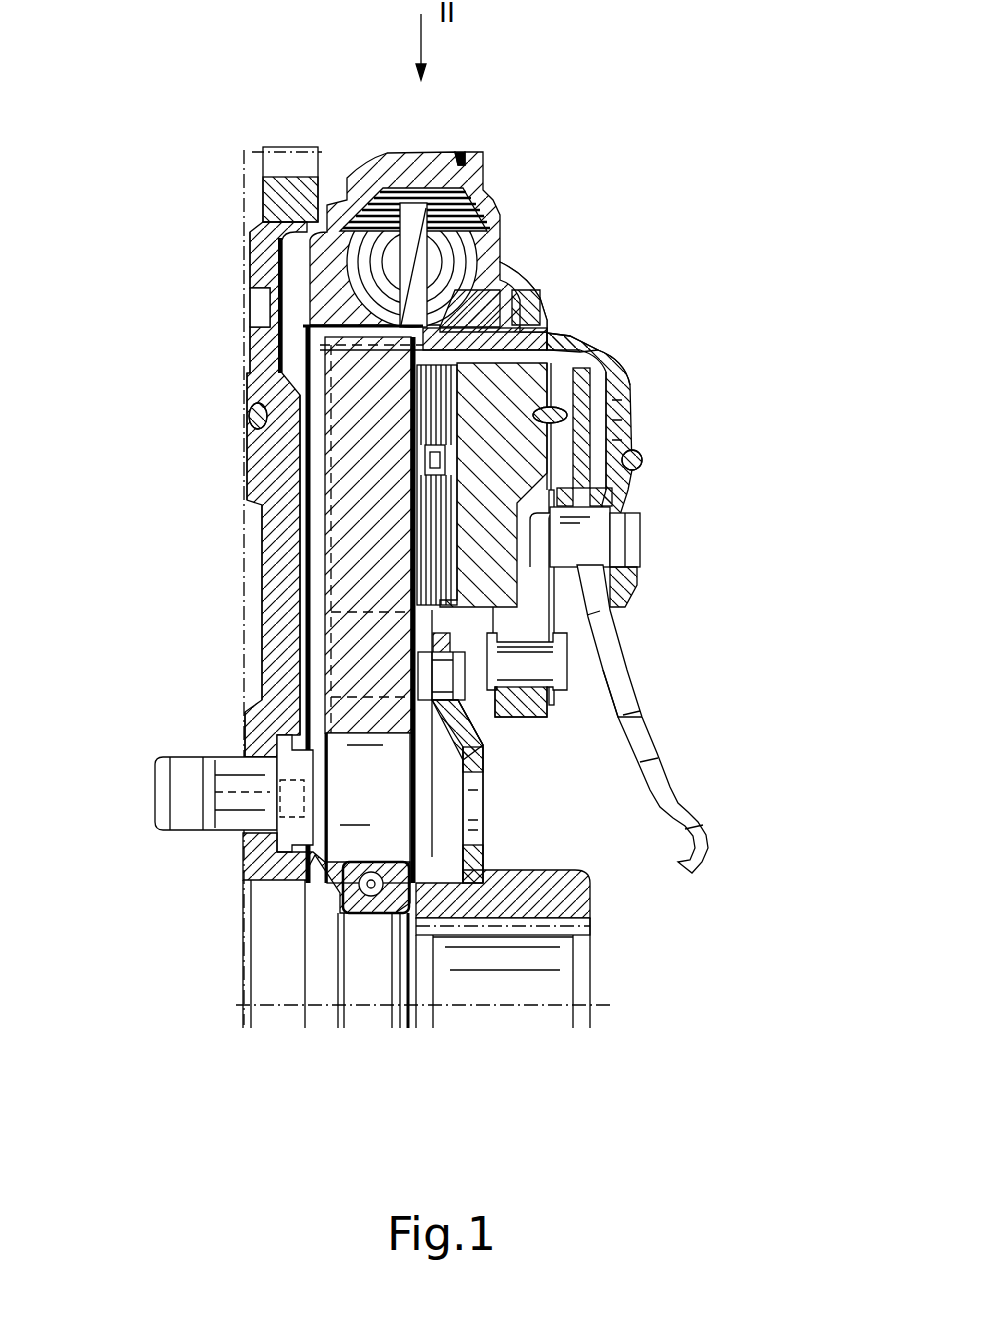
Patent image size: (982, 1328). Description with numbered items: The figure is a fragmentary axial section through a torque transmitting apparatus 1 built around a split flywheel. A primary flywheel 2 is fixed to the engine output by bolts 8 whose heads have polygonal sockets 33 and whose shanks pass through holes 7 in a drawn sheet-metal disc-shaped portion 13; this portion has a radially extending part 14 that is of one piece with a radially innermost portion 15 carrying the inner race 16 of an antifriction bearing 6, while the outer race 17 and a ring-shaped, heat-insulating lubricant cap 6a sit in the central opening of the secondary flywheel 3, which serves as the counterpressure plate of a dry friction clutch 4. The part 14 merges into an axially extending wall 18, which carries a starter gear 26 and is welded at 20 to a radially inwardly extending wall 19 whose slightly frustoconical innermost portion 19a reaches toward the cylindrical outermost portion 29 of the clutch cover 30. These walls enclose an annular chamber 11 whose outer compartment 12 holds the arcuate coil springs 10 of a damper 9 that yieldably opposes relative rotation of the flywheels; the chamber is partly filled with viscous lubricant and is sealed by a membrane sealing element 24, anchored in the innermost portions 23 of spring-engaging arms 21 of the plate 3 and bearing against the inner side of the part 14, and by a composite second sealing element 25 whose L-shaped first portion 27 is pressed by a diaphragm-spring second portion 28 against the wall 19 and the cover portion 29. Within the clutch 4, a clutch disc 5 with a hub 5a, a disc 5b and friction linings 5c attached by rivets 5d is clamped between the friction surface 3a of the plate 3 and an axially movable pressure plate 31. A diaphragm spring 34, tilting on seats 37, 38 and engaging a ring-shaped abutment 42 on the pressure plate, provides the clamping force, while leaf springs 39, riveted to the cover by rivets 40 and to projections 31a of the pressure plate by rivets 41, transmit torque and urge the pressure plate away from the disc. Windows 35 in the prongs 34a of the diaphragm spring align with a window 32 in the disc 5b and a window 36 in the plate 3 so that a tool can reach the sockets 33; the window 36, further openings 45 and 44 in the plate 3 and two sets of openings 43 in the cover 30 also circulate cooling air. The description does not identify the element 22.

The torque transmitting apparatus 1 is at (535, 101).
The primary flywheel 2 is at (255, 726).
The secondary flywheel 3 is at (335, 522).
The friction surface 3a is at (400, 540).
The dry friction clutch 4 is at (648, 363).
The clutch disc 5 is at (485, 743).
The hub 5a is at (578, 910).
The disc 5b is at (472, 867).
The friction linings 5c is at (425, 575).
The rivets 5d is at (590, 437).
The antifriction bearing 6 is at (340, 866).
The ring-shaped cap 6a is at (337, 904).
The holes 7 is at (240, 830).
The bolts 8 is at (180, 814).
The damper 9 is at (505, 225).
The arcuate energy storing elements 10 is at (487, 250).
The annular chamber 11 is at (300, 302).
The radially outermost compartment 12 is at (250, 252).
The disc-shaped portion 13 is at (265, 510).
The radially extending part 14 is at (280, 606).
The radially innermost portion 15 is at (381, 913).
The inner race 16 is at (333, 893).
The outer race 17 is at (287, 892).
The axially extending wall 18 is at (358, 165).
The radially inwardly extending wall 19 is at (472, 168).
The radially innermost portion of the wall 19a is at (523, 312).
The weld 20 is at (461, 158).
The arms 21 is at (270, 224).
The seal pocket 22 is at (350, 287).
The radially innermost portions of the arms 23 is at (298, 345).
The sealing element 24 is at (300, 482).
The second sealing element 25 is at (542, 317).
The starter gear 26 is at (272, 181).
The first portion 27 is at (527, 298).
The second portion 28 is at (540, 292).
The cylindrical radially outermost portion 29 is at (567, 338).
The clutch cover 30 is at (632, 368).
The pressure plate 31 is at (580, 380).
The torque transmitting projections 31a is at (560, 698).
The window 32 is at (478, 812).
The polygonal socket 33 is at (215, 784).
The diaphragm spring 34 is at (592, 473).
The prongs 34a is at (616, 665).
The windows 35 is at (672, 805).
The window 36 is at (385, 832).
The seat 37 is at (597, 493).
The seat 38 is at (600, 500).
The leaf springs 39 is at (637, 573).
The rivets 40 is at (597, 538).
The rivets 41 is at (530, 662).
The ring-shaped abutment 42 is at (590, 415).
The aerating openings 43 is at (588, 340).
The cooling openings 44 is at (235, 380).
The aerating openings 45 is at (360, 649).